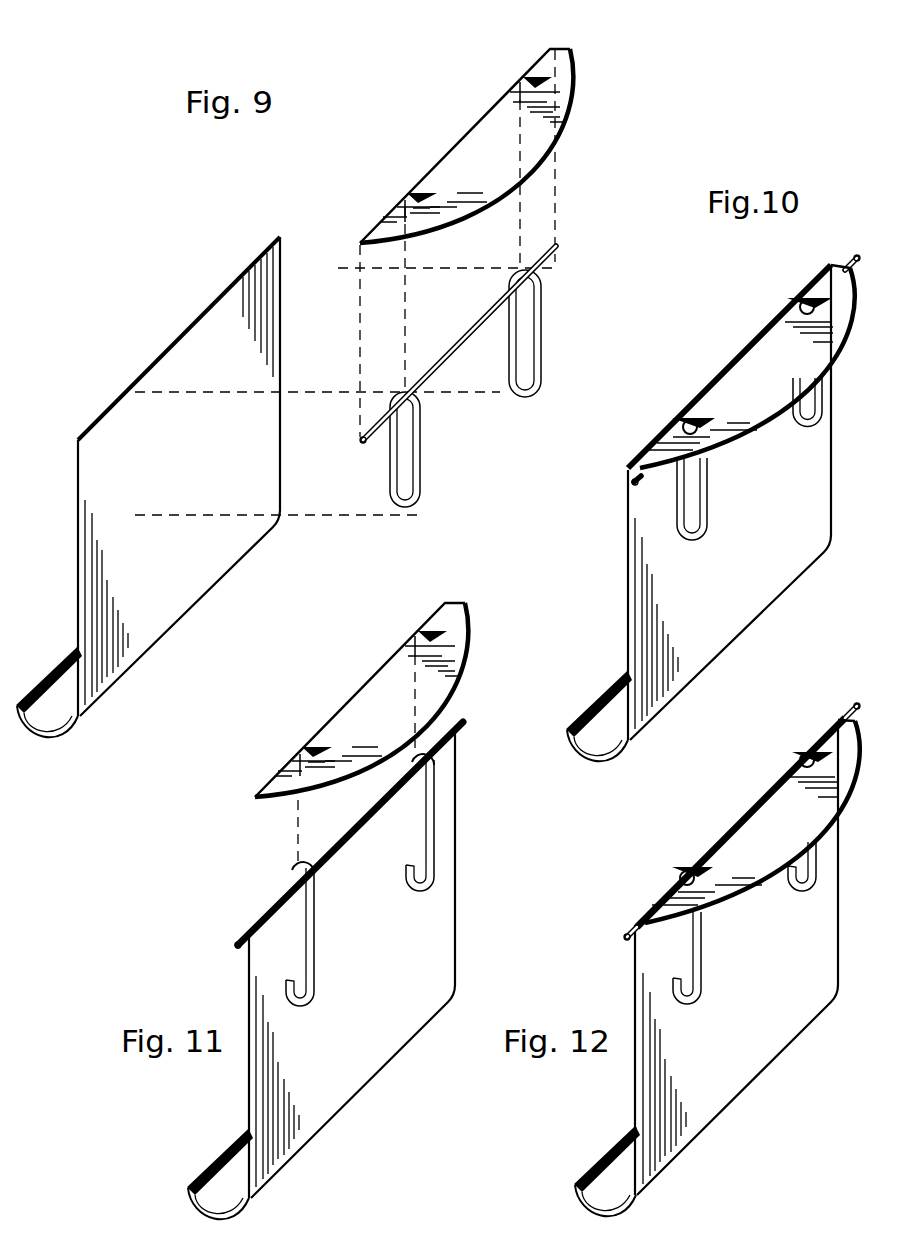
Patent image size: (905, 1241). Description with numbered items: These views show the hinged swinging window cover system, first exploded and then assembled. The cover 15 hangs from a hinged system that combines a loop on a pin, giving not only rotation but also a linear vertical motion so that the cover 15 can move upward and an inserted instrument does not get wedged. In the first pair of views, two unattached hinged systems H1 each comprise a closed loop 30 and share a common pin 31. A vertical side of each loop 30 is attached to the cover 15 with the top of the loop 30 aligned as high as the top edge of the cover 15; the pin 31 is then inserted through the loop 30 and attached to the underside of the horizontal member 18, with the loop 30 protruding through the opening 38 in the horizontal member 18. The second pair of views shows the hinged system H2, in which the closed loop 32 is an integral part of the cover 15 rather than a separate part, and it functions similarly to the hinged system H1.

In FIG. 9, the cover 15 is at (178, 578).
In FIG. 10, the cover 15 is at (687, 613).
In FIG. 11, the cover 15 is at (343, 1043).
In FIG. 12, the cover 15 is at (732, 1075).
In FIG. 9, the horizontal member 18 is at (472, 158).
In FIG. 10, the horizontal member 18 is at (780, 370).
In FIG. 11, the horizontal member 18 is at (440, 673).
In FIG. 12, the horizontal member 18 is at (743, 843).
In FIG. 9, the closed loop 30 is at (423, 485).
In FIG. 10, the closed loop 30 is at (675, 525).
In FIG. 9, the pin 31 is at (550, 257).
In FIG. 10, the pin 31 is at (628, 482).
In FIG. 11, the pin 31 is at (253, 912).
In FIG. 12, the pin 31 is at (633, 930).
In FIG. 11, the closed loop 32 is at (433, 763).
In FIG. 12, the closed loop 32 is at (805, 748).
In FIG. 9, the opening 38 is at (413, 193).
In FIG. 11, the opening 38 is at (308, 750).
In FIG. 9, the hinged system H1 is at (428, 407).
In FIG. 10, the hinged system H1 is at (672, 412).
In FIG. 11, the hinged system H2 is at (287, 861).
In FIG. 12, the hinged system H2 is at (667, 860).